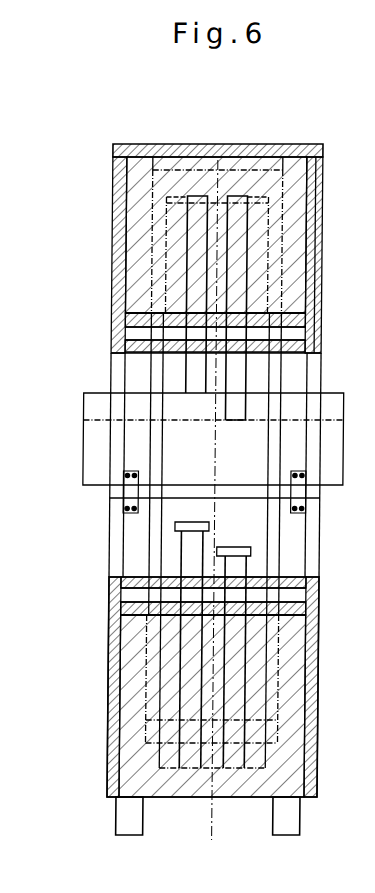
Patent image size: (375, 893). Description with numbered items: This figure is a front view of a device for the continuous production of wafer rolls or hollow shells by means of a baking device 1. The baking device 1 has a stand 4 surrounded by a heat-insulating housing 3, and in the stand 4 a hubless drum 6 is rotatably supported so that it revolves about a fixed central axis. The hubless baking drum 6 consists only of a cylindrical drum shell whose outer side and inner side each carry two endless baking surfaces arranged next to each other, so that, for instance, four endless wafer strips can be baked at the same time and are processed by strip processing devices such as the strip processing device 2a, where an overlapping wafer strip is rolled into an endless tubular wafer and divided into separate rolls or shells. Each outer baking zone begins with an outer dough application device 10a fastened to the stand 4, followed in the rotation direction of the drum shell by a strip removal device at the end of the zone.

The baking device 1 is at (235, 145).
The heat-insulating housing 3 is at (318, 222).
The strip processing device 2a is at (328, 393).
The outer dough application device 10a is at (176, 531).
The hubless drum 6 is at (262, 550).
The stand 4 is at (313, 564).